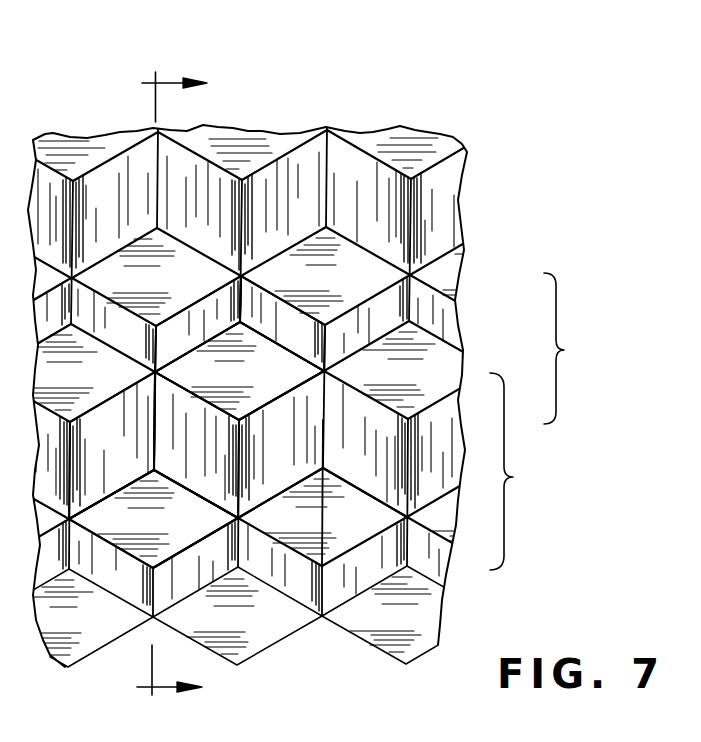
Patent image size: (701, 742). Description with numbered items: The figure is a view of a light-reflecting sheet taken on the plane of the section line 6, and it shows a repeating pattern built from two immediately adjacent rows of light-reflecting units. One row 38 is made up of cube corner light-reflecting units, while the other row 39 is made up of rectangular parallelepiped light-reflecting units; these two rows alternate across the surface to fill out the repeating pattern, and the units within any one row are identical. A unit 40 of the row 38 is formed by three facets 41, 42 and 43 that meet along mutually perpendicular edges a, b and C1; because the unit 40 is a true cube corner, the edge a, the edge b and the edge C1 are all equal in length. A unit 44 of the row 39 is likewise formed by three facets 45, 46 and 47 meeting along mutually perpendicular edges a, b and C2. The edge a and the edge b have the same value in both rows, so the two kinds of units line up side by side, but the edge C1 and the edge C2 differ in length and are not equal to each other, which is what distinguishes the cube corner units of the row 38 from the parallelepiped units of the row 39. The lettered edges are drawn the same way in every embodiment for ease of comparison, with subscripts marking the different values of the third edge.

The section line 6— 6 is at (172, 385).
The row of cube corner light-reflecting units 38 is at (517, 471).
The row of rectangular parallelepiped light-reflecting units 39 is at (569, 348).
The cube corner unit 40 is at (176, 553).
The facet 41 is at (160, 526).
The facet 42 is at (125, 460).
The facet 43 is at (210, 460).
The rectangular parallelepiped unit 44 is at (257, 402).
The facet 45 is at (251, 367).
The facet 46 is at (197, 347).
The facet 47 is at (311, 346).
The edge c1 C1 is at (156, 404).
The edge c2 C2 is at (241, 297).
The edge a is at (88, 505).
The edge b is at (215, 506).